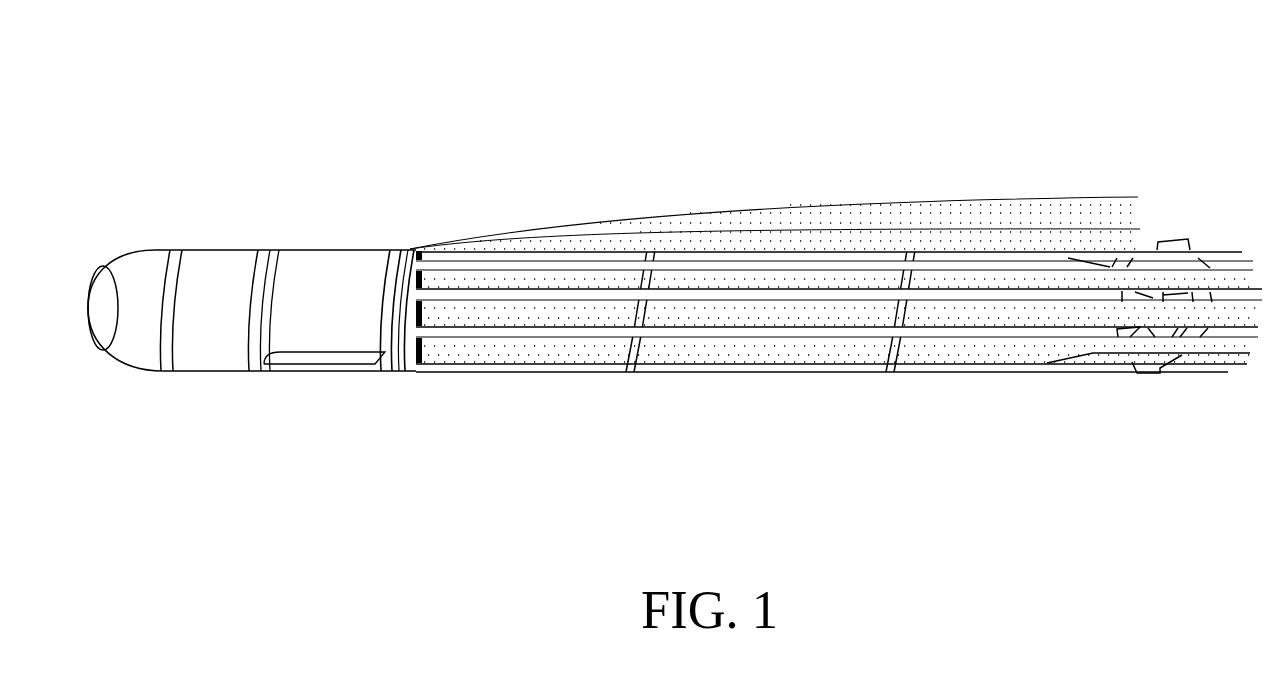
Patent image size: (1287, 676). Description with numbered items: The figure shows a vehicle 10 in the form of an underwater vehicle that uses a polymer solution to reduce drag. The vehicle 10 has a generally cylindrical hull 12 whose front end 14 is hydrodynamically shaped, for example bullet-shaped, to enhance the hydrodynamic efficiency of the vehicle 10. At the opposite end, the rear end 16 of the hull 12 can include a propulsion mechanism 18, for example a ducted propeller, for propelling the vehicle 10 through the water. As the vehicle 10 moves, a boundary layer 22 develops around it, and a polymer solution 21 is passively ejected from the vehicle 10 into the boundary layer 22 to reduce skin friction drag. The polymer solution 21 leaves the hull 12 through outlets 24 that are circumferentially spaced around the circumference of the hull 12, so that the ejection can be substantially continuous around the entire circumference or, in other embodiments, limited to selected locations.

The vehicle 10 is at (322, 84).
The hull 12 is at (641, 343).
The front end 14 is at (117, 259).
The rear end 16 is at (1040, 374).
The propulsion mechanism 18 is at (1182, 364).
The polymer solution 21 is at (418, 242).
The boundary layer 22 is at (691, 239).
The outlets 24 is at (430, 320).